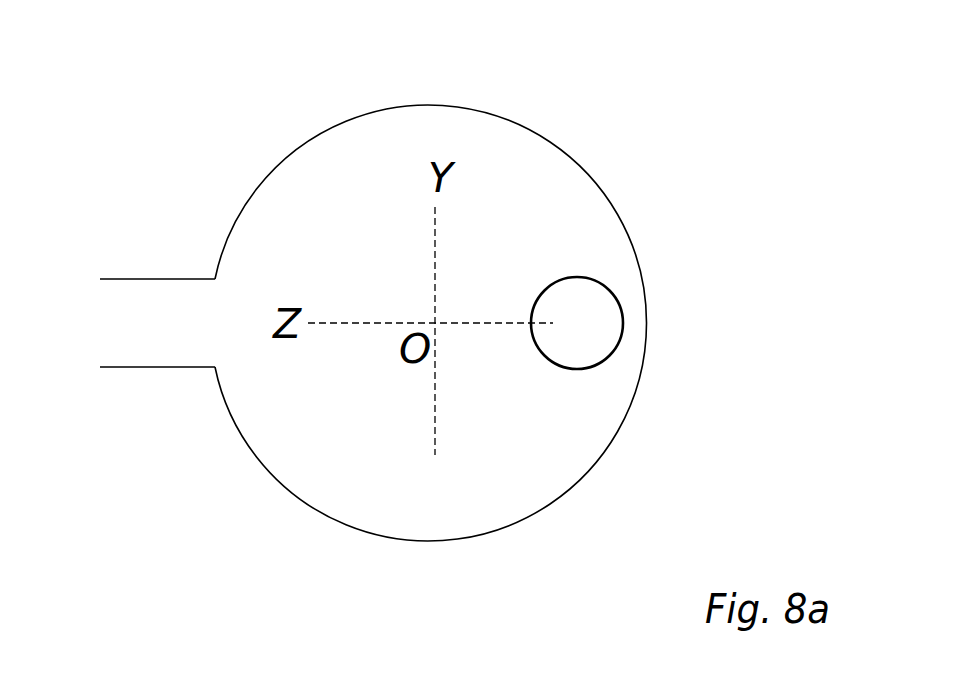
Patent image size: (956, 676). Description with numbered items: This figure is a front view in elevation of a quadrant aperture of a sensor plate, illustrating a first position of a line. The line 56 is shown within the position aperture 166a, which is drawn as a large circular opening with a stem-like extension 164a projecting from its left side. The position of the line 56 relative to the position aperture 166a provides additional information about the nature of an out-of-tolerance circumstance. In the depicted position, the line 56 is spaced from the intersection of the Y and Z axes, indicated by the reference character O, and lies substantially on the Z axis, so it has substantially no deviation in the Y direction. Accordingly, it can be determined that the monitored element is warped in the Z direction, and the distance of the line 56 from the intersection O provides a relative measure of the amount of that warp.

The position aperture 166a is at (522, 130).
The stem 164a is at (177, 278).
The line 56 is at (582, 278).